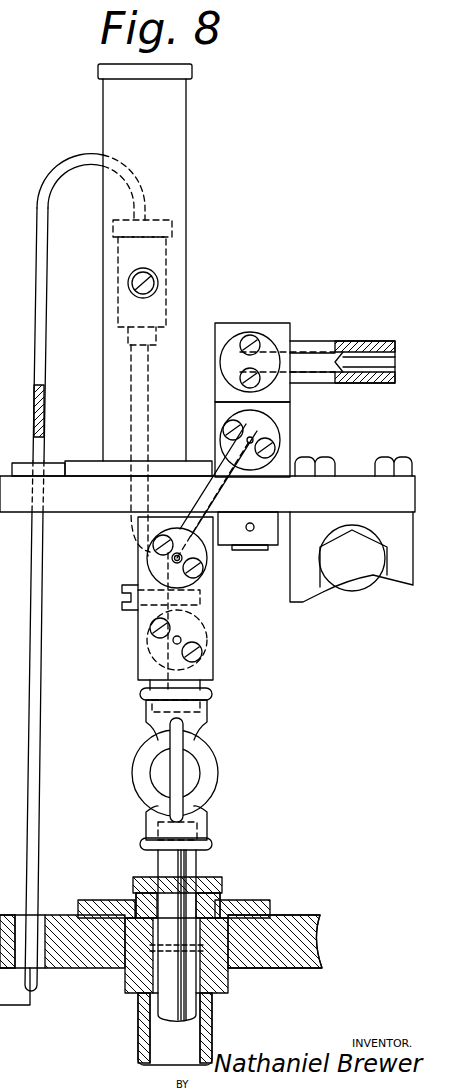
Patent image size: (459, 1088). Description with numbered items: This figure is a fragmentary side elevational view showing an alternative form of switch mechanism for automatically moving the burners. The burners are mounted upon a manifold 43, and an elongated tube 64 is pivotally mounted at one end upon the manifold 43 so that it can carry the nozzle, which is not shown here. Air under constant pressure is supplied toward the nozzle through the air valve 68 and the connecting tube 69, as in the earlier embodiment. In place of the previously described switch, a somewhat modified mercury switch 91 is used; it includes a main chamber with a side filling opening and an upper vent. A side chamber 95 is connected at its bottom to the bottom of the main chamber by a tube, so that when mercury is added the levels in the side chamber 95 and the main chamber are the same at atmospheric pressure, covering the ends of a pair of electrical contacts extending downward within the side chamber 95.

The mercury switch 91 is at (187, 196).
The side chamber 95 is at (116, 307).
The elongated tube 64 is at (337, 341).
The manifold 43 is at (352, 506).
The connecting tube 69 is at (213, 523).
The air valve 68 is at (208, 765).